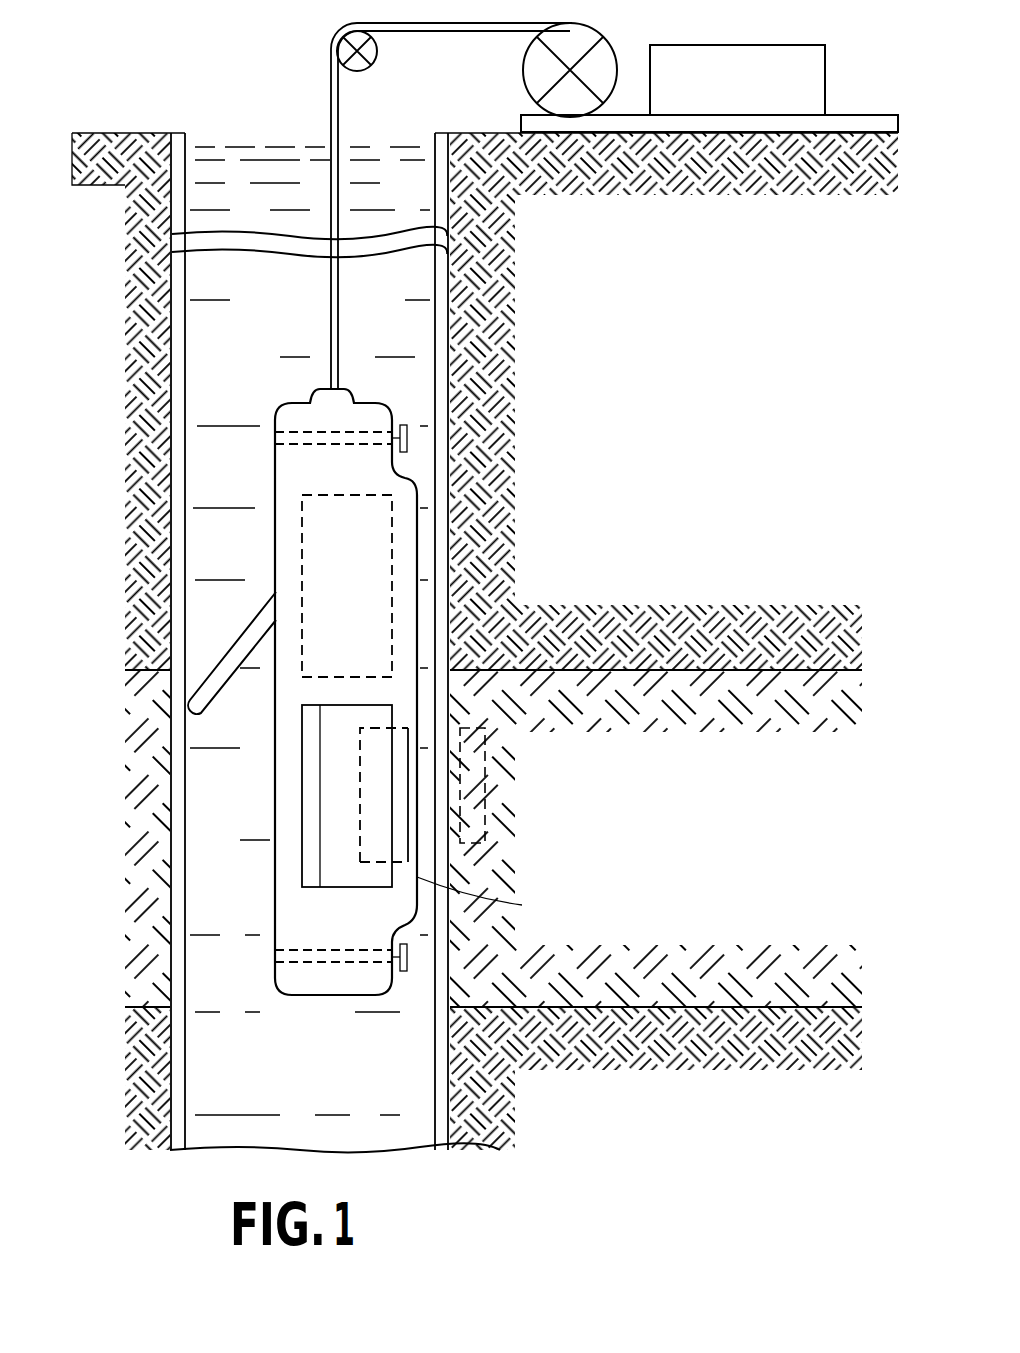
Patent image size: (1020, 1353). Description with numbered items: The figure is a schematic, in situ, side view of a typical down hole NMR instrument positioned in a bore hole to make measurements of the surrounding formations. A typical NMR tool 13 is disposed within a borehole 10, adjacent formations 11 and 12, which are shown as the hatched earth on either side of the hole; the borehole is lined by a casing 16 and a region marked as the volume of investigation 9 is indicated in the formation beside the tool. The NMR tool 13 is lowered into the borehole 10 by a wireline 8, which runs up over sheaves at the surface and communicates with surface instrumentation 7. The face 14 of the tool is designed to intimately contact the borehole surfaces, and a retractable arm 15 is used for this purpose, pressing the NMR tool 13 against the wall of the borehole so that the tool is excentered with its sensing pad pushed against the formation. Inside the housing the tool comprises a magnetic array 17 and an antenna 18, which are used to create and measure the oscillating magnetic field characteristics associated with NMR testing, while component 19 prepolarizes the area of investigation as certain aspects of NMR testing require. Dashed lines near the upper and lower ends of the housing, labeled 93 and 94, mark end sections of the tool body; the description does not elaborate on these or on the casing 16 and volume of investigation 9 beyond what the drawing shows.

The surface instrumentation 7 is at (748, 45).
The wireline 8 is at (329, 140).
The volume of investigation 9 is at (488, 776).
The borehole 10 is at (240, 373).
The formation 11 is at (583, 351).
The formation 12 is at (826, 914).
The NMR tool 13 is at (276, 900).
The face of the tool 14 is at (490, 900).
The retractable arm 15 is at (232, 650).
The casing 16 is at (446, 1052).
The magnetic array 17 is at (302, 800).
The antenna 18 is at (408, 828).
The prepolarizing component 19 is at (357, 591).
The upper seal section 93 is at (322, 445).
The lower seal section 94 is at (318, 963).